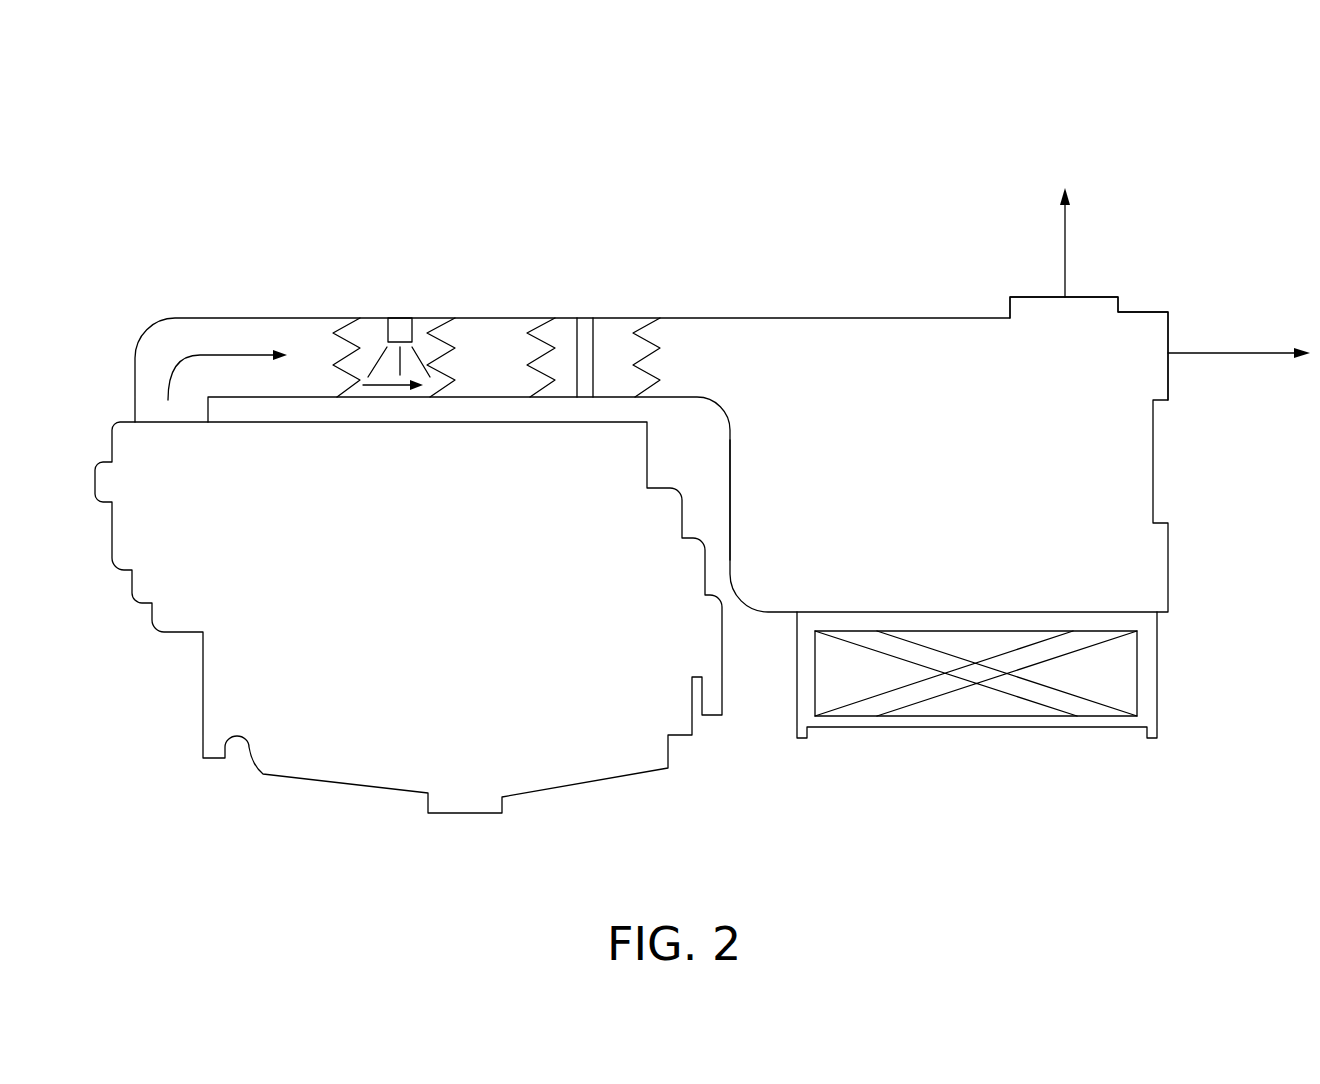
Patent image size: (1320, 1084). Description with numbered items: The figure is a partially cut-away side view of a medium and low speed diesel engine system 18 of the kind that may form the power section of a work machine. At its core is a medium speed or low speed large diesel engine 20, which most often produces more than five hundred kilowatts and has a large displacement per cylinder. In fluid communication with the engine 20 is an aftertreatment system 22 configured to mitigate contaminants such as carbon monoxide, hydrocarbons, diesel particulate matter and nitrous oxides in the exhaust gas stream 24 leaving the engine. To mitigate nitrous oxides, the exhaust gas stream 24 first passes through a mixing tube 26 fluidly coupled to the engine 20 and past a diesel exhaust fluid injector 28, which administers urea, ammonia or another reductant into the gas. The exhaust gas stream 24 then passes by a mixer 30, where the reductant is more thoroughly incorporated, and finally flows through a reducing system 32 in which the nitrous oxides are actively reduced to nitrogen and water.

The medium and low speed diesel engine system 18 is at (213, 133).
The medium speed or low speed large diesel engine 20 is at (348, 703).
The aftertreatment system 22 is at (739, 252).
The exhaust gas stream 24 is at (177, 368).
The mixing tube 26 is at (245, 318).
The diesel exhaust fluid (DEF) injector 28 is at (398, 318).
The mixer 30 is at (585, 318).
The reducing system 32 is at (1100, 373).